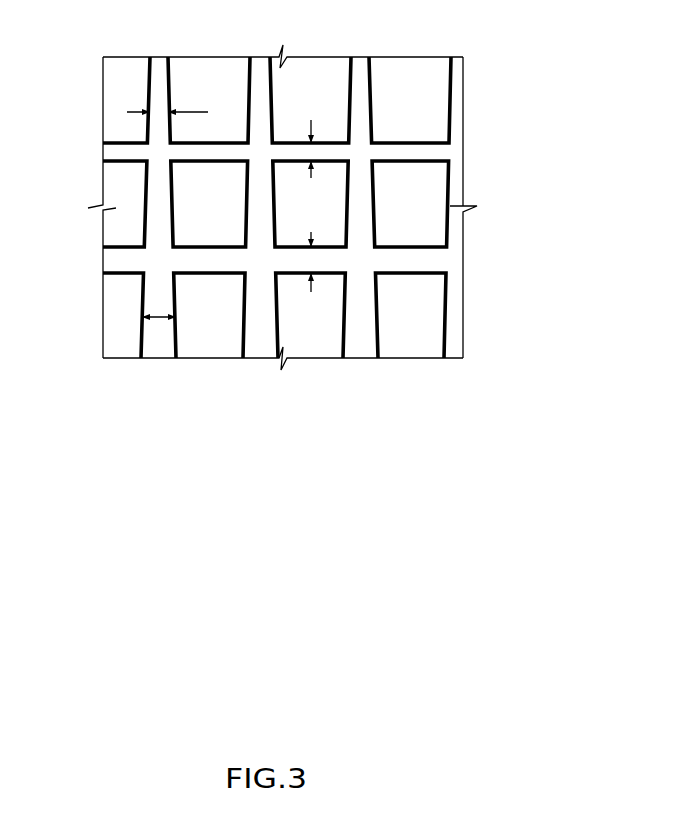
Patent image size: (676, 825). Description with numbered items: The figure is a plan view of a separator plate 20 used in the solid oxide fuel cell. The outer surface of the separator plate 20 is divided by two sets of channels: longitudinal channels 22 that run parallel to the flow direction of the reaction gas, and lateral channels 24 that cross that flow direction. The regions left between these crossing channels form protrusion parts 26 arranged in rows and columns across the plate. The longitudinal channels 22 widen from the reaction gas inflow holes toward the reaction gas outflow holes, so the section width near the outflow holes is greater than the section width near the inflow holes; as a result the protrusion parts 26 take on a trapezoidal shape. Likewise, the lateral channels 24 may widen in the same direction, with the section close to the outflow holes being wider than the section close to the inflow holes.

The separator plate 20 is at (68, 68).
The longitudinal channels 22 is at (367, 343).
The lateral channels 24 is at (419, 262).
The protrusion parts 26 is at (440, 101).